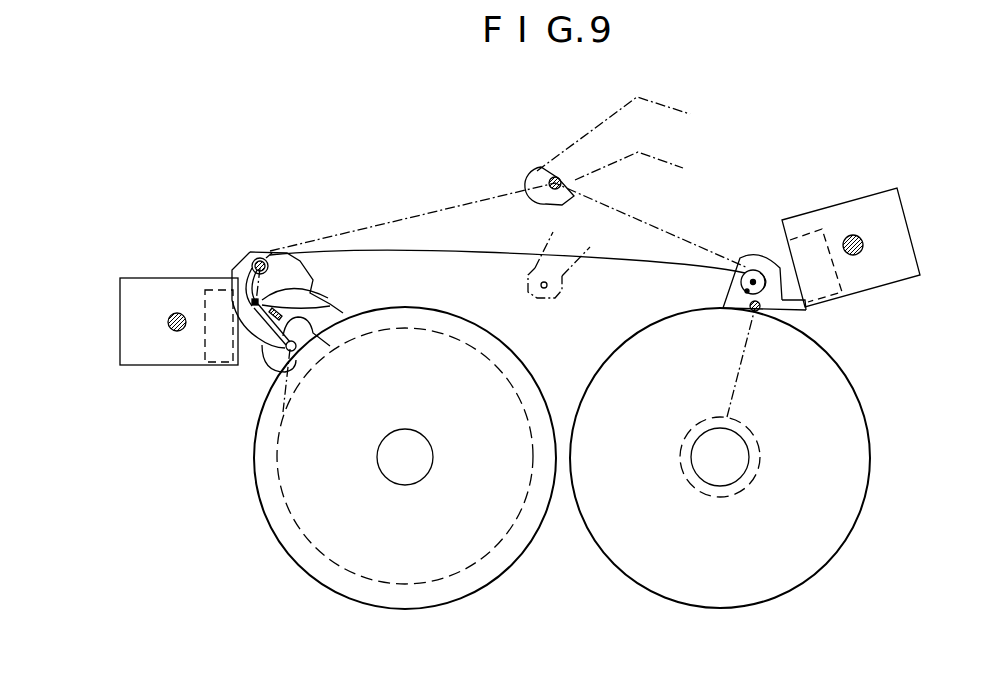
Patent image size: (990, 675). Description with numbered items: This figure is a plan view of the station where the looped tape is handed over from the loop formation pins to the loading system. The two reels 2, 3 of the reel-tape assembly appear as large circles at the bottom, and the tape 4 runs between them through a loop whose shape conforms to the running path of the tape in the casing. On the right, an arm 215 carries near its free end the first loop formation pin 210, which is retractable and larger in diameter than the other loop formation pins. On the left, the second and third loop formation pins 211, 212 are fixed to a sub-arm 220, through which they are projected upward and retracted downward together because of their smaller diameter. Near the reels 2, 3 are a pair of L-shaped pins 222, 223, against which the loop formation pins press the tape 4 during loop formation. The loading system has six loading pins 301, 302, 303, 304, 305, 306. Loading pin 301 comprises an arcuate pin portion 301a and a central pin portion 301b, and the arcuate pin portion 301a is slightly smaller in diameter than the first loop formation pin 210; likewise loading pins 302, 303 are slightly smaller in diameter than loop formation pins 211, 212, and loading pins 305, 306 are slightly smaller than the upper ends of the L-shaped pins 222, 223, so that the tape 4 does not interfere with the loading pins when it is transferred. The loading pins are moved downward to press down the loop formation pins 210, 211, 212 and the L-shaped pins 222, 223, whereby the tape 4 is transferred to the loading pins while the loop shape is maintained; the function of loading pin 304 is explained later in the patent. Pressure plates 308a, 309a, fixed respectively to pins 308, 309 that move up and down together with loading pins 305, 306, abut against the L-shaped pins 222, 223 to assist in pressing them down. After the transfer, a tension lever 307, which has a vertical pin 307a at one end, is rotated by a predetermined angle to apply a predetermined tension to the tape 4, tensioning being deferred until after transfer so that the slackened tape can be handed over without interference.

The reel 2 is at (738, 593).
The reel 3 is at (440, 597).
The tape 4 is at (432, 212).
The first loop formation pin 210 is at (750, 284).
The second loop formation pin 211 is at (282, 254).
The third loop formation pin 212 is at (320, 296).
The arm 215 is at (750, 257).
The sub-arm 220 is at (240, 262).
The L-shaped pin 222 is at (805, 308).
The L-shaped pin 223 is at (273, 354).
The loading pin 301 is at (735, 280).
The arcuate pin portion 301a is at (766, 270).
The central pin portion 301b is at (745, 292).
The loading pin 302 is at (261, 256).
The loading pin 303 is at (305, 283).
The loading pin 304 is at (327, 350).
The loading pin 305 is at (757, 312).
The loading pin 306 is at (293, 382).
The tension lever 307 is at (548, 168).
The vertical pin 307a is at (545, 205).
The pin 308 is at (853, 235).
The pressure plate 308a is at (905, 250).
The pin 309 is at (171, 313).
The pressure plate 309a is at (122, 315).